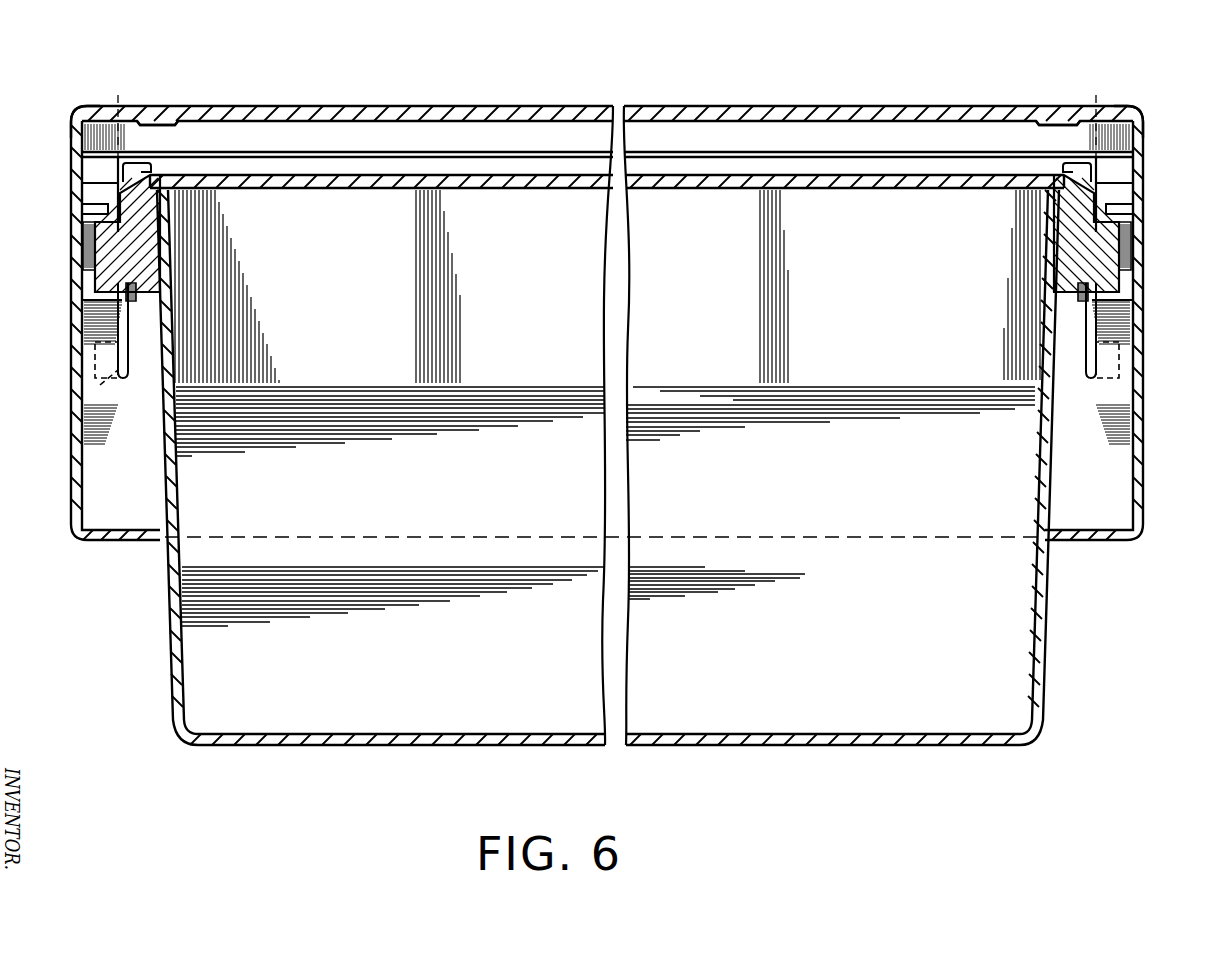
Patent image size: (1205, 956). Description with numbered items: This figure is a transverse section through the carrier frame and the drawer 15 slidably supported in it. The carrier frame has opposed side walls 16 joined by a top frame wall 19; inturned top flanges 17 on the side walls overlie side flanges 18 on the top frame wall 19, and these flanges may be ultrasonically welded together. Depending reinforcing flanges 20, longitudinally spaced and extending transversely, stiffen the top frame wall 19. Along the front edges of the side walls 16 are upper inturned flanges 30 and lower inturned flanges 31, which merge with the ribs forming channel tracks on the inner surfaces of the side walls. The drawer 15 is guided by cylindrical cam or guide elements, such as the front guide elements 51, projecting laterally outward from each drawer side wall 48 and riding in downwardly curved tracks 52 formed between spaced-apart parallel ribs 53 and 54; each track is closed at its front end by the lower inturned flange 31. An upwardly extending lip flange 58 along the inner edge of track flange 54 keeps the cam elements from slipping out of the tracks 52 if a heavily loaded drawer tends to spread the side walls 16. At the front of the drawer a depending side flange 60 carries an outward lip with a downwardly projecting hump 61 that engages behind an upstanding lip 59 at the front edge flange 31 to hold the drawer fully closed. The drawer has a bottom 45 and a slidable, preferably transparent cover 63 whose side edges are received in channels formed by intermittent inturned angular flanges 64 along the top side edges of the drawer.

The drawer 15 is at (160, 647).
The side walls 16 is at (81, 334).
The inturned top flanges 17 is at (118, 110).
The side flanges 18 is at (148, 122).
The top frame wall 19 is at (668, 110).
The reinforcing flanges 20 is at (528, 124).
The upper inturned flanges 30 is at (92, 191).
The lower inturned flanges 31 is at (1124, 419).
The drawer bottom 45 is at (706, 746).
The drawer side wall 48 is at (170, 492).
The front guide elements 51 is at (100, 258).
The tracks 52 is at (82, 238).
The track rib 53 is at (100, 214).
The track flange 54 is at (82, 306).
The lip flange 58 is at (137, 296).
The upstanding lip 59 is at (95, 352).
The depending side flange 60 is at (120, 352).
The hump 61 is at (100, 385).
The slidable cover 63 is at (697, 189).
The inturned angular flanges 64 is at (151, 172).